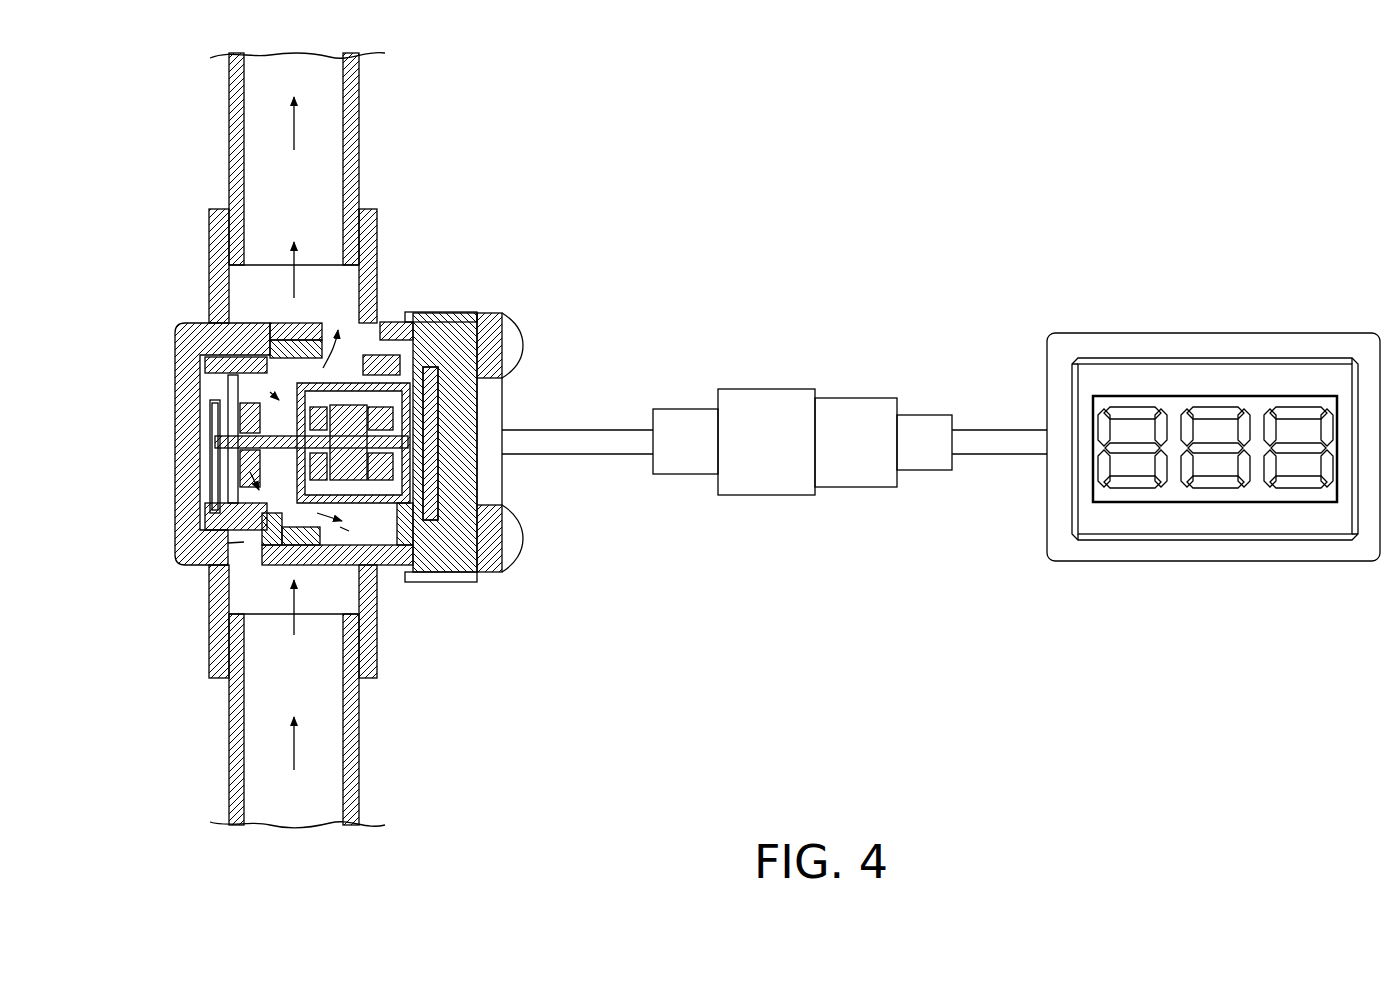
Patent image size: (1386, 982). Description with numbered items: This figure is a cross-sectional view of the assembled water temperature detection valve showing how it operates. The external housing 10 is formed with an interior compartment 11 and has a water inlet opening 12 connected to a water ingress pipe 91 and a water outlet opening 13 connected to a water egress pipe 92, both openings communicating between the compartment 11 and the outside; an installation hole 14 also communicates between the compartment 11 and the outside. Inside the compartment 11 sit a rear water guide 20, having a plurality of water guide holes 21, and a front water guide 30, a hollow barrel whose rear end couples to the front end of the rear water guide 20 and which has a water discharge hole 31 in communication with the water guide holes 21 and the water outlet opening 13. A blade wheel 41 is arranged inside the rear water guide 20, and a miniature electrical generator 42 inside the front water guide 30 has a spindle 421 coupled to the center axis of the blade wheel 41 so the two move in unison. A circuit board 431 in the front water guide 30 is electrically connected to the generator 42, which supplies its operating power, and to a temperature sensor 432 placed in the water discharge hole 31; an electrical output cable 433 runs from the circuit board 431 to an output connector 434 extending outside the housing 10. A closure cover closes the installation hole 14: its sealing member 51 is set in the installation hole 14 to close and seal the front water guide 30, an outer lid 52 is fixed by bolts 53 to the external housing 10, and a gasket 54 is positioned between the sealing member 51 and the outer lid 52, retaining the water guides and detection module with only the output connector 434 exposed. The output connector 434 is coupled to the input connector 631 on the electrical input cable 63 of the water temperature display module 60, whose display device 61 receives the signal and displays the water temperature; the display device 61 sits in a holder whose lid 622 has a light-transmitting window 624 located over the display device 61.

The external housing 10 is at (197, 336).
The compartment 11 is at (382, 562).
The water inlet opening 12 is at (345, 643).
The water outlet opening 13 is at (243, 243).
The installation hole 14 is at (432, 322).
The rear water guide 20 is at (227, 518).
The water guide holes 21 is at (237, 467).
The front water guide 30 is at (458, 322).
The water discharge hole 31 is at (347, 335).
The blade wheel 41 is at (242, 418).
The miniature electrical generator 42 is at (367, 530).
The spindle 421 is at (247, 402).
The circuit board 431 is at (470, 480).
The temperature sensor 432 is at (392, 325).
The electrical output cable 433 is at (628, 437).
The output connector 434 is at (815, 428).
The sealing member 51 is at (497, 405).
The outer lid 52 is at (485, 322).
The bolts 53 is at (510, 322).
The gasket 54 is at (493, 523).
The water temperature display module 60 is at (1311, 268).
The display device 61 is at (1265, 490).
The lid 622 is at (1092, 345).
The light-transmitting window 624 is at (1174, 498).
The electrical input cable 63 is at (993, 437).
The input connector 631 is at (817, 456).
The water ingress pipe 91 is at (229, 760).
The water egress pipe 92 is at (229, 103).